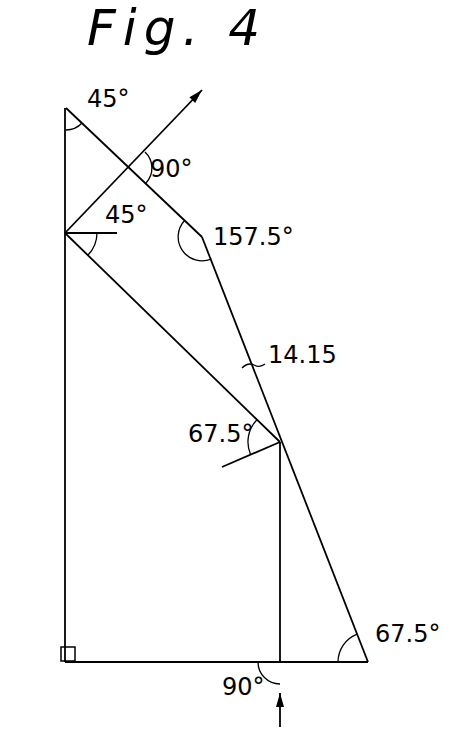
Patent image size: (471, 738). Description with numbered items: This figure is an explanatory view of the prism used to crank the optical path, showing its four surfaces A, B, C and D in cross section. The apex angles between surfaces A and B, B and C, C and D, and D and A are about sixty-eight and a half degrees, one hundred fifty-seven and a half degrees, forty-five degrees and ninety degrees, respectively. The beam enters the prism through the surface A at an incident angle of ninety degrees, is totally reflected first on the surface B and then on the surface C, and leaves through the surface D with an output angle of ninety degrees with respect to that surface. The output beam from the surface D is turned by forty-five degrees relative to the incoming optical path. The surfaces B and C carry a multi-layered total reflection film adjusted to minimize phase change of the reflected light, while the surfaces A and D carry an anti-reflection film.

The surface A is at (158, 662).
The surface B is at (322, 541).
The surface C is at (64, 335).
The surface D is at (177, 206).